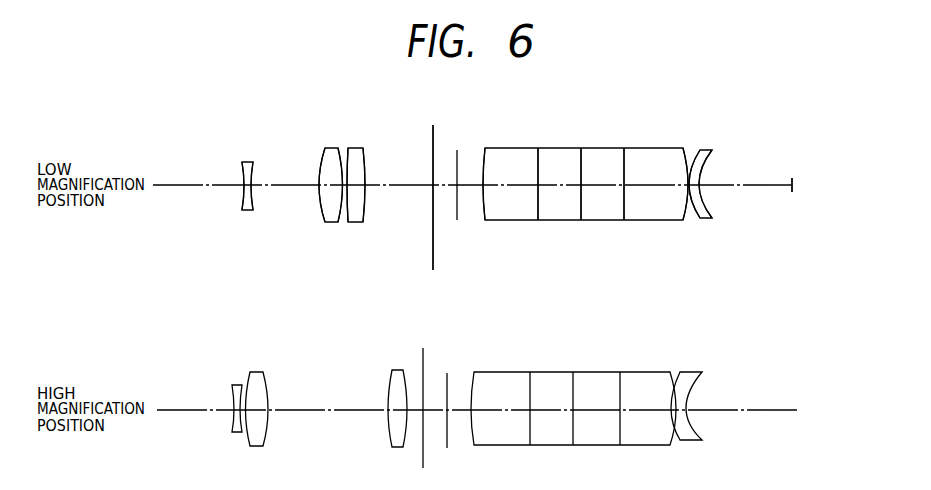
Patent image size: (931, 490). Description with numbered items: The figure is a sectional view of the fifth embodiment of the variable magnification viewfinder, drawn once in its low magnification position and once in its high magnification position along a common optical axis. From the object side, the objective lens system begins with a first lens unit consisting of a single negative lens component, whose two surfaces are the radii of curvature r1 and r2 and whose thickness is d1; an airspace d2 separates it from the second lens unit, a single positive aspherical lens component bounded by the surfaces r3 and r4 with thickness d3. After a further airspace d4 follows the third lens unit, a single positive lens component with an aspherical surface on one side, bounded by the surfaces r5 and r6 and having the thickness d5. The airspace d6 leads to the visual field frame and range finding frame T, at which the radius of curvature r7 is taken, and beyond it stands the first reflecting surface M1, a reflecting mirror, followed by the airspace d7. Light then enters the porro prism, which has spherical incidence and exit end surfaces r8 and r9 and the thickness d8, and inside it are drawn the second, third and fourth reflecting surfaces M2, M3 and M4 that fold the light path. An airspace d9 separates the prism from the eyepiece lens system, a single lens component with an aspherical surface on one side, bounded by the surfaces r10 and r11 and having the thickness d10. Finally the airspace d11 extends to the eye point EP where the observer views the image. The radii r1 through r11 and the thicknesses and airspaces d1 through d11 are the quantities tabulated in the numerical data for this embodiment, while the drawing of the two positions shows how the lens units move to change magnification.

The lens thickness d1 is at (246, 185).
The airspace d2 is at (278, 184).
The lens thickness d3 is at (328, 185).
The airspace d4 is at (344, 185).
The lens thickness d5 is at (356, 185).
The airspace d6 is at (396, 183).
The airspace d7 is at (470, 183).
The prism thickness d8 is at (687, 133).
The airspace d9 is at (690, 175).
The lens thickness d10 is at (706, 165).
The airspace d11 is at (752, 183).
The radius of curvature r1 is at (243, 196).
The radius of curvature r2 is at (255, 197).
The radius of curvature r3 is at (323, 207).
The radius of curvature r4 is at (341, 220).
The radius of curvature r5 is at (348, 221).
The radius of curvature r6 is at (365, 221).
The radius of curvature r7 is at (433, 233).
The radius of curvature r8 is at (483, 213).
The radius of curvature r9 is at (683, 217).
The radius of curvature r10 is at (698, 218).
The radius of curvature r11 is at (712, 204).
The visual field frame and range finding frame T is at (433, 240).
The first reflecting surface M1 is at (457, 217).
The second reflecting surface M2 is at (538, 212).
The third reflecting surface M3 is at (581, 212).
The fourth reflecting surface M4 is at (624, 212).
The eye point EP is at (783, 198).